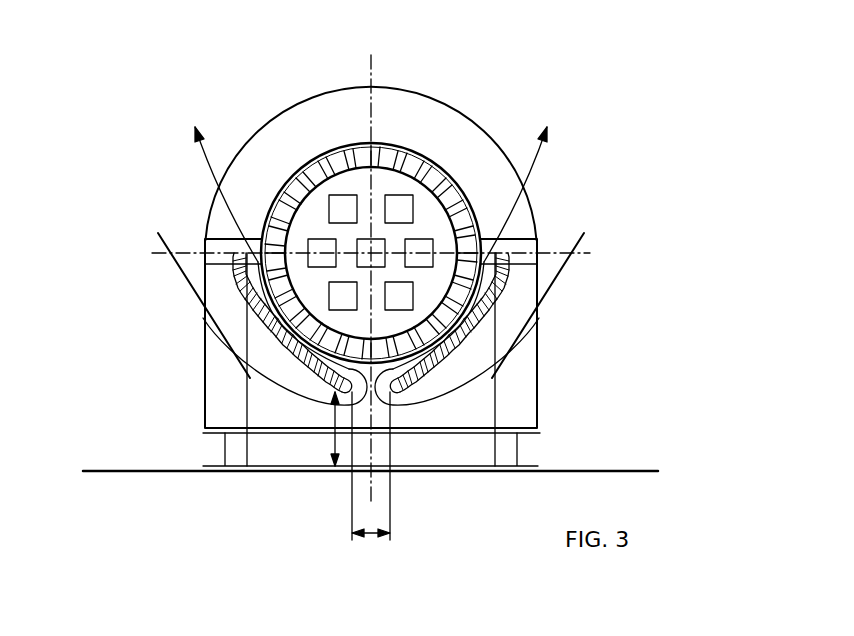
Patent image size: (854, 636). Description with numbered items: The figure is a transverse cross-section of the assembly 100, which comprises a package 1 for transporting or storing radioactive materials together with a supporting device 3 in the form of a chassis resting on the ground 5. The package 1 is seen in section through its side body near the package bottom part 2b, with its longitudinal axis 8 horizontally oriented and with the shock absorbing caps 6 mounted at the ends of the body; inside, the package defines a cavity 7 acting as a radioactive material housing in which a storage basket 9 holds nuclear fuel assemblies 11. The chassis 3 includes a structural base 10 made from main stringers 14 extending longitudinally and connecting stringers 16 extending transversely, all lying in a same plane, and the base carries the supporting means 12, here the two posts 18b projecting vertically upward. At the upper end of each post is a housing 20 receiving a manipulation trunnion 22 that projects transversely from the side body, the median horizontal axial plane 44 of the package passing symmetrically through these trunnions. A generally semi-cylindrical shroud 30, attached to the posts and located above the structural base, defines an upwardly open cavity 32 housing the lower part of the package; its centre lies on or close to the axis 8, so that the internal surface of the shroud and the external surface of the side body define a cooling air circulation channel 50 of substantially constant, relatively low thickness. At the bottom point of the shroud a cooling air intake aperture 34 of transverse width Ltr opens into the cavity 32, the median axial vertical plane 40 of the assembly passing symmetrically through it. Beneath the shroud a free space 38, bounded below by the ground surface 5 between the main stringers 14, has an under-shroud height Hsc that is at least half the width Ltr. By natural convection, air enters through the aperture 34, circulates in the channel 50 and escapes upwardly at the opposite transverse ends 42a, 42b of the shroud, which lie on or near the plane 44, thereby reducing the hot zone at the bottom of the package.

The package 1 is at (325, 113).
The assembly 100 is at (483, 77).
The median axial vertical plane 40 is at (373, 65).
The nuclear fuel assemblies 11 is at (340, 195).
The longitudinal axis 8 is at (383, 242).
The shock absorbing caps 6 is at (460, 130).
The package bottom part 2b is at (457, 183).
The storage basket 9 is at (300, 182).
The cavity 7 is at (330, 192).
The manipulation trunnion 22 is at (262, 217).
The median horizontal axial plane 44 is at (157, 238).
The housing 20 is at (205, 260).
The transverse end 42a is at (235, 290).
The transverse end 42b is at (507, 288).
The cavity 32 is at (246, 316).
The shroud 30 is at (508, 306).
The cooling air circulation channel 50 is at (487, 335).
The supporting means 12 is at (190, 372).
The posts 18b is at (216, 384).
The ground 5 is at (118, 470).
The main stringers 14 is at (222, 448).
The free space 38 is at (458, 417).
The cooling air intake aperture 34 is at (373, 390).
The structural base 10 is at (297, 463).
The connecting stringers 16 is at (452, 470).
The supporting device 3 is at (503, 511).
The under-shroud height Hsc is at (335, 445).
The transverse width Ltr is at (360, 533).